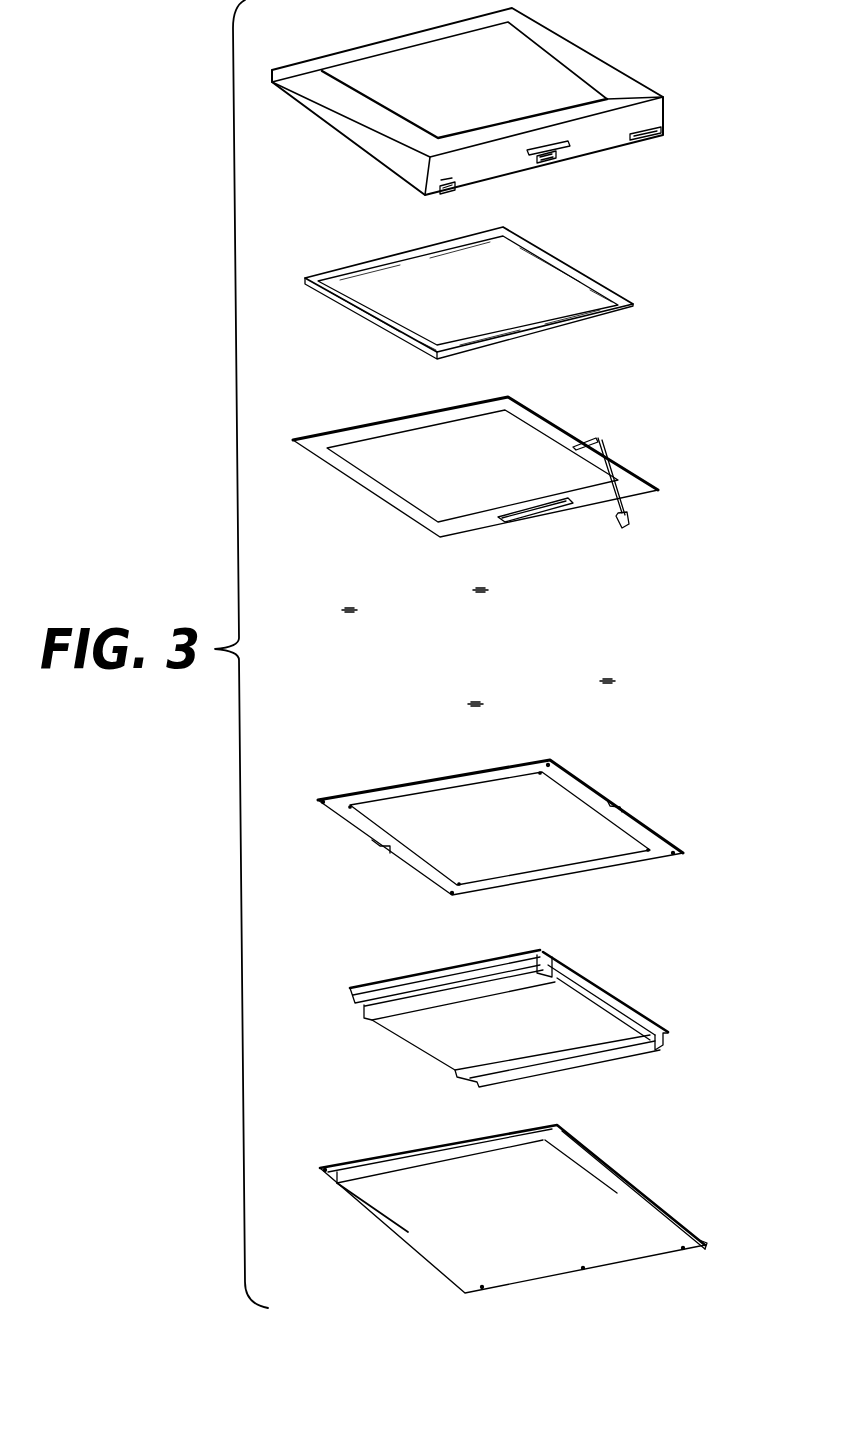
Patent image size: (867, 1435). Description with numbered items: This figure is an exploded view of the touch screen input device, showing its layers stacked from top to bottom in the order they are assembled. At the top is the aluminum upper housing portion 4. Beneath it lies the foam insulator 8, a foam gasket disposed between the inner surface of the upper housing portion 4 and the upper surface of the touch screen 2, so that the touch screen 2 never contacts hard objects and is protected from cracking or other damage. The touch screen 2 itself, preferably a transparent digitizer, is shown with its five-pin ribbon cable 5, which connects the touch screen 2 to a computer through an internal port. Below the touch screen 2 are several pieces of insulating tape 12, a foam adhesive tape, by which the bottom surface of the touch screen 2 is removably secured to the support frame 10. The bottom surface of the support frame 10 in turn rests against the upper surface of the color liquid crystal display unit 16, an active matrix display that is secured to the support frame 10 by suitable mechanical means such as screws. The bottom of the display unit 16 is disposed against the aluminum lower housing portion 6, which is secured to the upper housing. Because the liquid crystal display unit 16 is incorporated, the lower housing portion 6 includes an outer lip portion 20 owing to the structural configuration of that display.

The touch screen 2 is at (532, 420).
The upper housing portion 4 is at (648, 108).
The ribbon cable 5 is at (602, 442).
The lower housing portion 6 is at (637, 1190).
The foam insulator 8 is at (575, 273).
The support frame 10 is at (650, 828).
The insulating tape 12 is at (348, 607).
The color liquid crystal display unit 16 is at (600, 996).
The outer lip portion 20 is at (382, 1172).